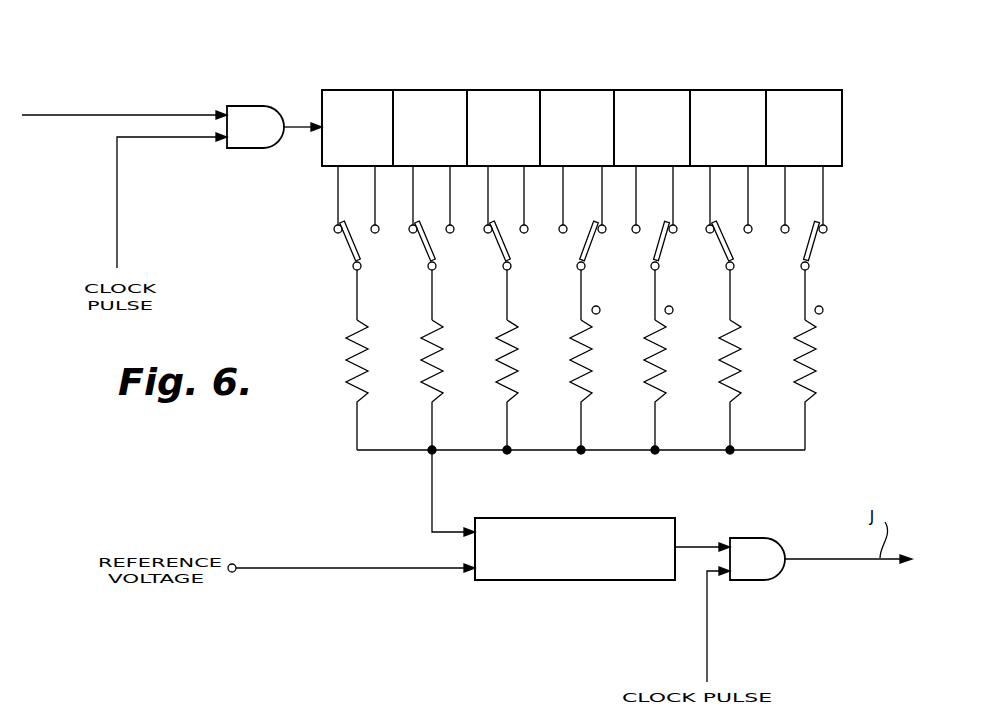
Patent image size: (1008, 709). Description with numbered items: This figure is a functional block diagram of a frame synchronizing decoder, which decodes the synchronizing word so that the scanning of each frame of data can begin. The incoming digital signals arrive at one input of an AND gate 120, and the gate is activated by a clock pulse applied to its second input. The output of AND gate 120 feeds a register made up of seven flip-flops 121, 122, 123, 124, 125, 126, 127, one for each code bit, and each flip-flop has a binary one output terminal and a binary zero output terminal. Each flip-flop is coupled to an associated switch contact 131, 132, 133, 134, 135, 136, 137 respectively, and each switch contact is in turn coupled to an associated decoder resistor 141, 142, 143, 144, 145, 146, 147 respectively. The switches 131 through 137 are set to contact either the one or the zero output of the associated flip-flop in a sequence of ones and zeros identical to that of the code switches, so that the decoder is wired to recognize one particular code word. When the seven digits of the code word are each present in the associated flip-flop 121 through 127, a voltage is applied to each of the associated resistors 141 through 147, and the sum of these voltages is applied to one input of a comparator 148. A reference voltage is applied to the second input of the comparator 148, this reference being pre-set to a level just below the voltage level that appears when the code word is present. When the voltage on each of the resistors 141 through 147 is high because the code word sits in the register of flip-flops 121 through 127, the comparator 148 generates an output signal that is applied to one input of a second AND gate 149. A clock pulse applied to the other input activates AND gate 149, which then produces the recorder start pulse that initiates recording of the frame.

The AND gate 120 is at (237, 106).
The flip-flop 121 is at (342, 90).
The flip-flop 122 is at (426, 90).
The flip-flop 123 is at (503, 90).
The flip-flop 124 is at (577, 90).
The flip-flop 125 is at (657, 90).
The flip-flop 126 is at (735, 90).
The flip-flop 127 is at (817, 90).
The switch contact 131 is at (350, 252).
The switch contact 132 is at (424, 248).
The switch contact 133 is at (500, 248).
The switch contact 134 is at (586, 250).
The switch contact 135 is at (659, 252).
The switch contact 136 is at (727, 251).
The switch contact 137 is at (812, 245).
The decoder resistor 141 is at (348, 343).
The decoder resistor 142 is at (425, 382).
The decoder resistor 143 is at (501, 382).
The decoder resistor 144 is at (576, 382).
The decoder resistor 145 is at (650, 382).
The decoder resistor 146 is at (740, 388).
The decoder resistor 147 is at (812, 362).
The comparator 148 is at (518, 581).
The AND gate 149 is at (775, 578).